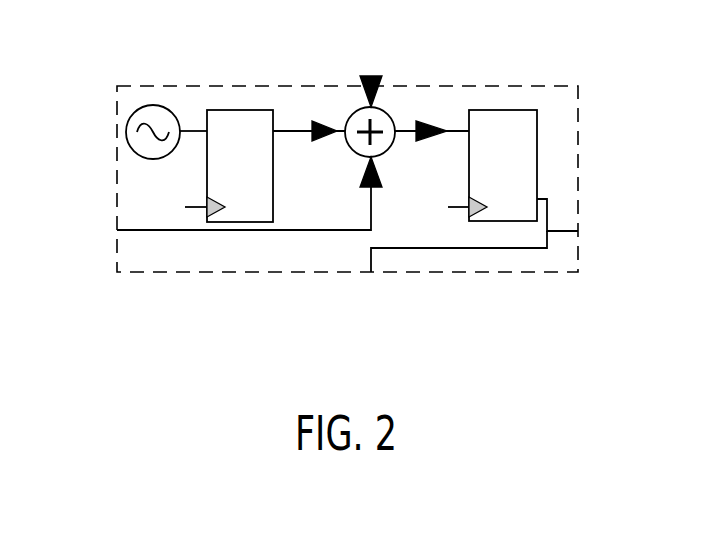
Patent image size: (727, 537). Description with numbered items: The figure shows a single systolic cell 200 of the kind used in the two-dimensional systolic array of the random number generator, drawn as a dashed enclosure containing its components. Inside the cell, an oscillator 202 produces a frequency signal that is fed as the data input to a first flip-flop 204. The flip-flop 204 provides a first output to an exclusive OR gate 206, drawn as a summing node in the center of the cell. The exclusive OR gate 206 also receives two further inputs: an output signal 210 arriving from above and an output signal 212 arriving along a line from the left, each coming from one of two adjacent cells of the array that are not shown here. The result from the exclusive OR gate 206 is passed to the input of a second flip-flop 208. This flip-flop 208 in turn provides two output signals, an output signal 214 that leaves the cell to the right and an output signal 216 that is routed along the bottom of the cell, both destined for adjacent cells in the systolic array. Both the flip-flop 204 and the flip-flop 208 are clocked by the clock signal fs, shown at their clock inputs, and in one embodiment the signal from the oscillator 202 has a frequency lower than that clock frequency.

The systolic cell 200 is at (113, 107).
The oscillator 202 is at (157, 112).
The flip-flop 204 is at (243, 110).
The exclusive OR gate 206 is at (392, 112).
The flip-flop 208 is at (513, 112).
The output signal 210 is at (372, 76).
The output signal 212 is at (113, 230).
The output signal 214 is at (578, 232).
The output signal 216 is at (365, 272).